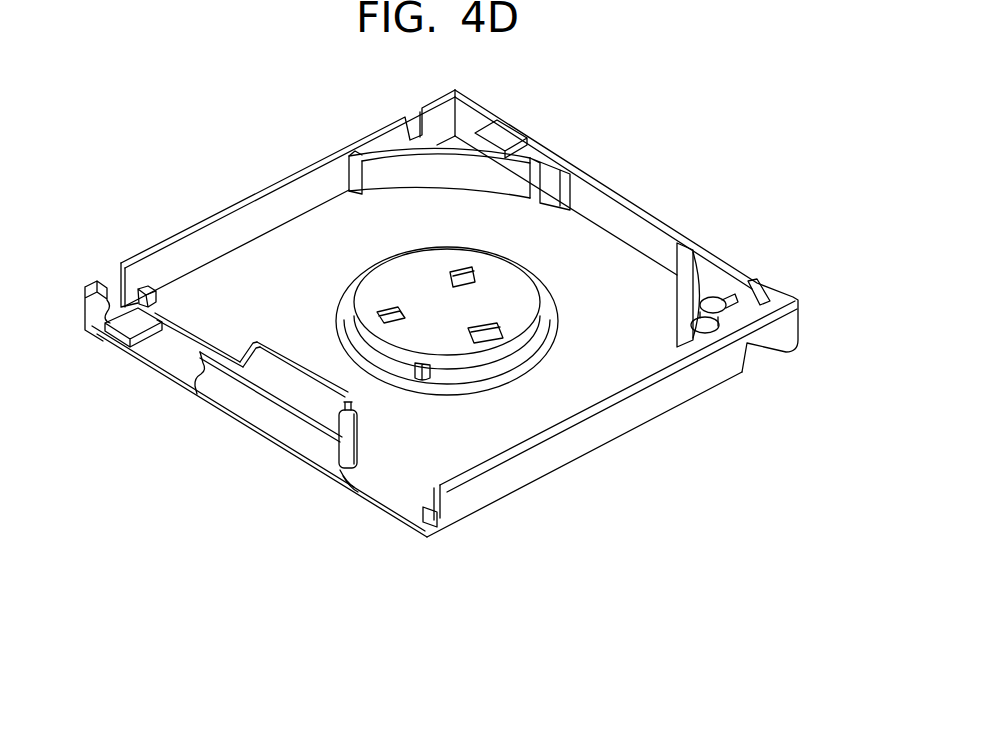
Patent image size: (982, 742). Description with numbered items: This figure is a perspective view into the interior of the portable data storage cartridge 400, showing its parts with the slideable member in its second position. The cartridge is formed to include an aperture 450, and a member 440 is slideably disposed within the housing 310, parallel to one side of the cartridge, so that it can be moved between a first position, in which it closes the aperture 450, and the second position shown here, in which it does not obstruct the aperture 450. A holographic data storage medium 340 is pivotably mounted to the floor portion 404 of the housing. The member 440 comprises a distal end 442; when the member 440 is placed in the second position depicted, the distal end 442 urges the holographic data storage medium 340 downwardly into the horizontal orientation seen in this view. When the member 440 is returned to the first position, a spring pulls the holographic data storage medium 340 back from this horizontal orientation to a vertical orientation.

The portable data storage cartridge 400 is at (493, 545).
The housing 310 is at (641, 427).
The floor portion 404 is at (300, 298).
The distal end 442 is at (148, 288).
The holographic data storage medium 340 is at (138, 331).
The member 440 is at (290, 383).
The aperture 450 is at (388, 473).